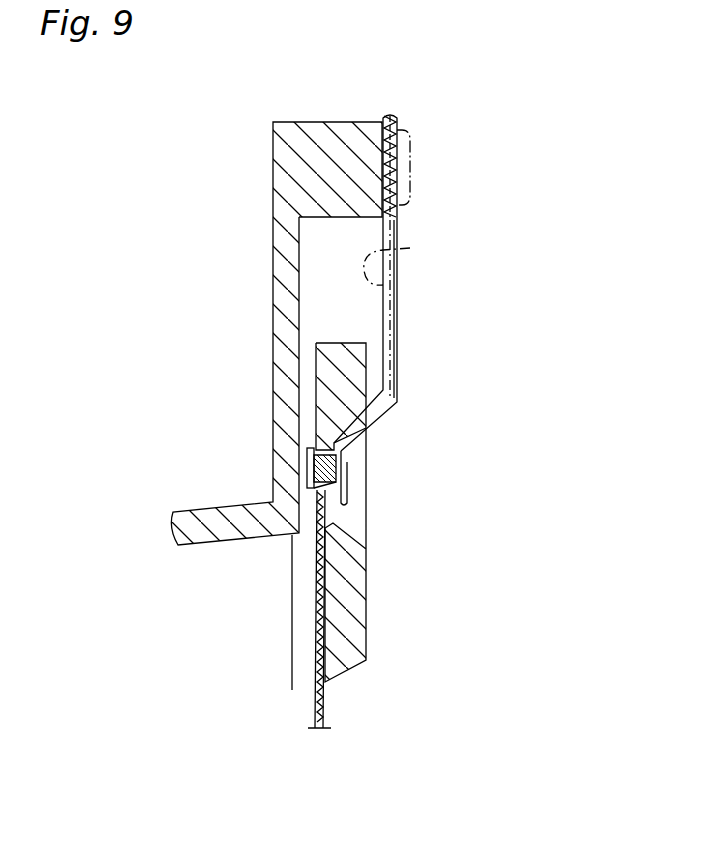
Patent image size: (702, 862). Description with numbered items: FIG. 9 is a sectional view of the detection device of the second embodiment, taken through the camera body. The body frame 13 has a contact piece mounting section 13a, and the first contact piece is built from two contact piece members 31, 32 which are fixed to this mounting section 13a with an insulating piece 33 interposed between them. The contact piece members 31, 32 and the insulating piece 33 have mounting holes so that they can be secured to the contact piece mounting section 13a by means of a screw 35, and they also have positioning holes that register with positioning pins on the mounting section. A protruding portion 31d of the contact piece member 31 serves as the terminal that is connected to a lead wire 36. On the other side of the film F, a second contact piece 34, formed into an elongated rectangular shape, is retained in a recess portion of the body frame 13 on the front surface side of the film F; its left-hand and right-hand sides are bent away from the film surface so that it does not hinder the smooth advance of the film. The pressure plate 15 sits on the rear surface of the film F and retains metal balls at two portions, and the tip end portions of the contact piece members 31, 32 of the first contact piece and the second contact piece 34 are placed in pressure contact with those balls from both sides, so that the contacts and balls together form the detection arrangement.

The body frame 13 is at (273, 320).
The contact piece mounting section 13a is at (322, 157).
The insulating piece 33 is at (388, 114).
The screw 35 is at (407, 150).
The contact piece member 31 is at (398, 300).
The contact piece member 32 is at (400, 248).
The pressure plate 15 is at (368, 575).
The protruding portion 31d is at (343, 488).
The second contact piece 34 is at (305, 470).
The lead wire 36 is at (318, 520).
The film F is at (325, 707).